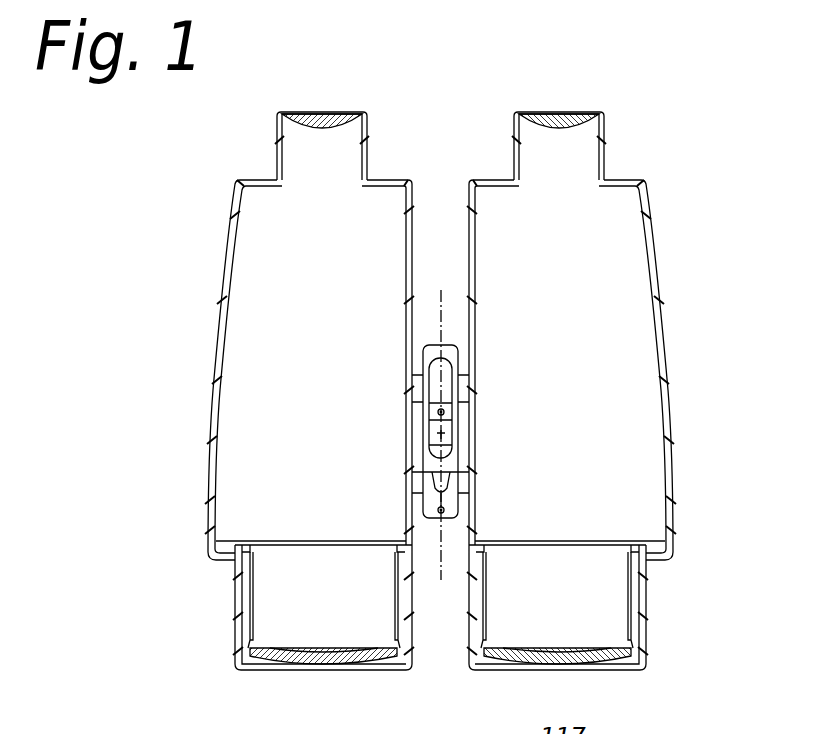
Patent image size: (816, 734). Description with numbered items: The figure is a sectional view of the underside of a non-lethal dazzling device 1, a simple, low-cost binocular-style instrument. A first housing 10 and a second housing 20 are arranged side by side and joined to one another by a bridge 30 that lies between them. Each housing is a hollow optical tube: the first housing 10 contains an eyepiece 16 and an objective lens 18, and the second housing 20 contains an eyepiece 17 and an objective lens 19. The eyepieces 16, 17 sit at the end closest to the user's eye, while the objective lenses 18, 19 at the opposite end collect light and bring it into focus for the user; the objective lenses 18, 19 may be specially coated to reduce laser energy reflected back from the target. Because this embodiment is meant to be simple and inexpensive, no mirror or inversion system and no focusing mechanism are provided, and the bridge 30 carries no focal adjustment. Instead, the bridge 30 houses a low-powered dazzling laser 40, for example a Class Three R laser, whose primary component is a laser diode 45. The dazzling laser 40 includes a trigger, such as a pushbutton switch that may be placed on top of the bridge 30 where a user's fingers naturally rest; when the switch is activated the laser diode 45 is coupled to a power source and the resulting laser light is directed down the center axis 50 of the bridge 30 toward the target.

The non-lethal dazzling device 1 is at (180, 220).
The first housing 10 is at (212, 423).
The second housing 20 is at (670, 455).
The eyepiece 16 is at (366, 123).
The eyepiece 17 is at (527, 135).
The objective lens 18 is at (375, 655).
The objective lens 19 is at (605, 658).
The bridge 30 is at (417, 390).
The dazzling laser 40 is at (452, 345).
The laser diode 45 is at (445, 509).
The center axis 50 is at (440, 312).